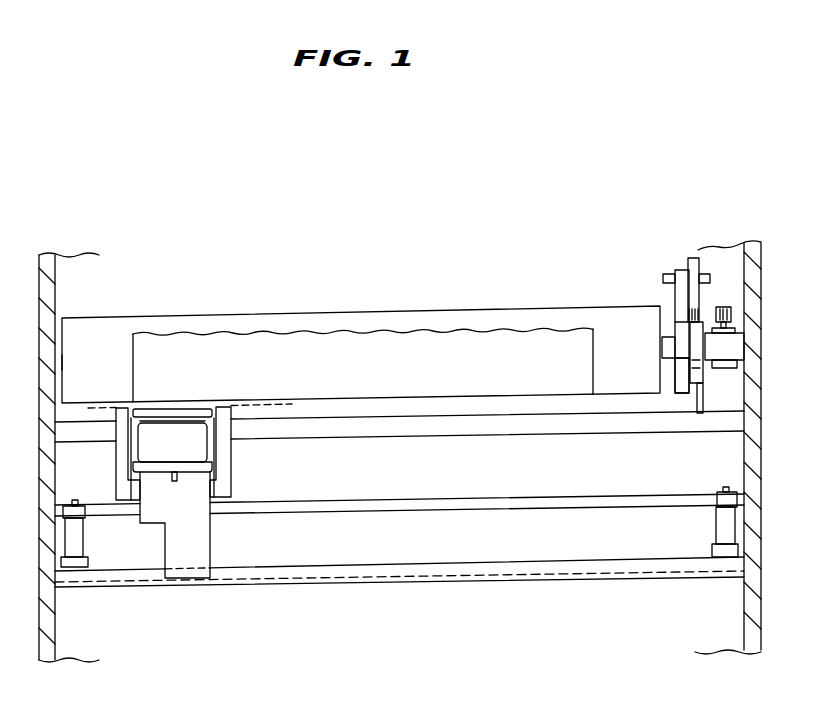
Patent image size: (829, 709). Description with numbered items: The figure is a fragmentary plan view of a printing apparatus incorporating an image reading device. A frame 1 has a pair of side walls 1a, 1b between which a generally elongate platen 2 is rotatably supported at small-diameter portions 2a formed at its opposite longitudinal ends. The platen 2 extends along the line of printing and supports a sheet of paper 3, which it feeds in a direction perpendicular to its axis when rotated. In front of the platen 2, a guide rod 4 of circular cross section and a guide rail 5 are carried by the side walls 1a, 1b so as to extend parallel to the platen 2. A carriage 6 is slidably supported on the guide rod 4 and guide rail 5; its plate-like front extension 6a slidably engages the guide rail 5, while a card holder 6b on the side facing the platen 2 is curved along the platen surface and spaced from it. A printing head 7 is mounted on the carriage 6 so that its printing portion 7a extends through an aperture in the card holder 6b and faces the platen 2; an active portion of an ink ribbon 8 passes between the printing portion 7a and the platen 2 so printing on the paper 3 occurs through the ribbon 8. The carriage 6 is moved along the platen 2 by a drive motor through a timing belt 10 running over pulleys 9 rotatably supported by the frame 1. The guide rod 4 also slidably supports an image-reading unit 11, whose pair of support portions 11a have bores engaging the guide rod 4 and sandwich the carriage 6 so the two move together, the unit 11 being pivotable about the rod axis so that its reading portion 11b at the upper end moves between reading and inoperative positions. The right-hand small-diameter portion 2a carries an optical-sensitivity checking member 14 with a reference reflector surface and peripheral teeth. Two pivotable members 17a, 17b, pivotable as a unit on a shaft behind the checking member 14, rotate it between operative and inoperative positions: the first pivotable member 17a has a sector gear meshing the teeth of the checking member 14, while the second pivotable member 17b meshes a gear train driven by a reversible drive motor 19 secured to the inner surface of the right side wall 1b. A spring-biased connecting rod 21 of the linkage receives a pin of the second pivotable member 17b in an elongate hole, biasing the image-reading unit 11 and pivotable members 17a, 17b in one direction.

The frame 1 is at (400, 414).
The left side wall 1a is at (55, 288).
The right side wall 1b is at (715, 240).
The platen 2 is at (407, 316).
The small-diameter portions 2a is at (62, 361).
The sheet of paper 3 is at (386, 386).
The guide rod 4 is at (450, 427).
The guide rail 5 is at (483, 568).
The carriage 6 is at (189, 465).
The front extension 6a is at (204, 553).
The card holder 6b is at (200, 412).
The printing head 7 is at (172, 440).
The printing portion 7a is at (173, 406).
The ink ribbon 8 is at (265, 404).
The pulleys 9 is at (79, 500).
The timing belt 10 is at (545, 498).
The image-reading unit 11 is at (189, 428).
The support portions 11a is at (117, 433).
The reading portion 11b is at (227, 407).
The optical-sensitivity checking member 14 is at (683, 377).
The first pivotable member 17a is at (680, 302).
The second pivotable member 17b is at (688, 263).
The drive motor 19 is at (721, 368).
The connecting rod 21 is at (700, 298).